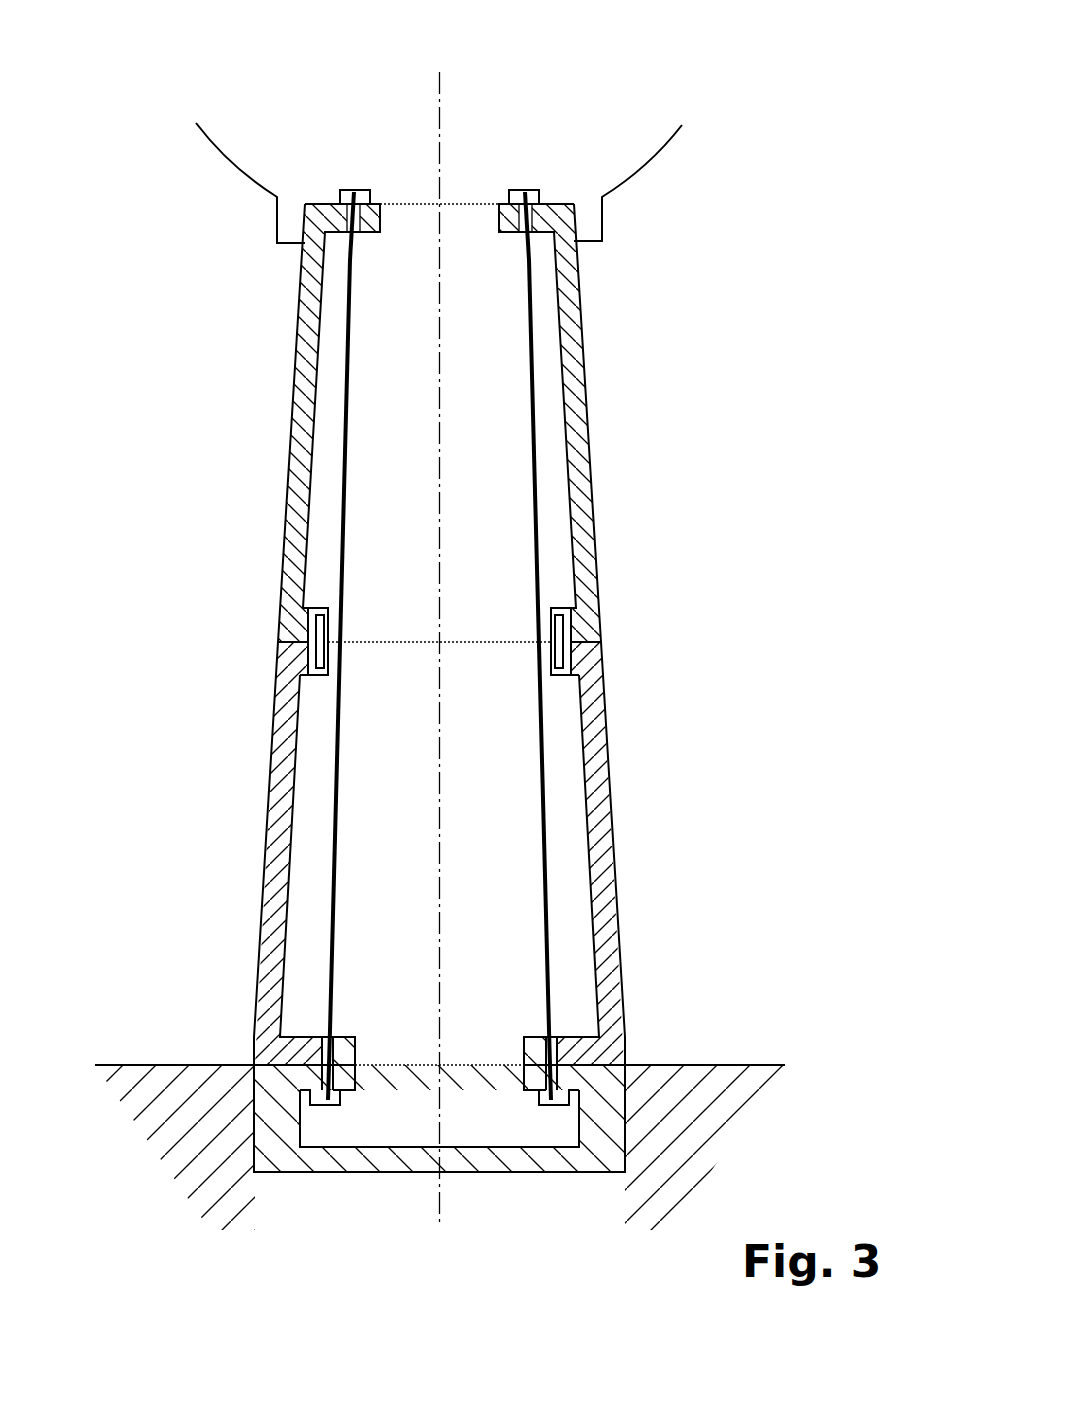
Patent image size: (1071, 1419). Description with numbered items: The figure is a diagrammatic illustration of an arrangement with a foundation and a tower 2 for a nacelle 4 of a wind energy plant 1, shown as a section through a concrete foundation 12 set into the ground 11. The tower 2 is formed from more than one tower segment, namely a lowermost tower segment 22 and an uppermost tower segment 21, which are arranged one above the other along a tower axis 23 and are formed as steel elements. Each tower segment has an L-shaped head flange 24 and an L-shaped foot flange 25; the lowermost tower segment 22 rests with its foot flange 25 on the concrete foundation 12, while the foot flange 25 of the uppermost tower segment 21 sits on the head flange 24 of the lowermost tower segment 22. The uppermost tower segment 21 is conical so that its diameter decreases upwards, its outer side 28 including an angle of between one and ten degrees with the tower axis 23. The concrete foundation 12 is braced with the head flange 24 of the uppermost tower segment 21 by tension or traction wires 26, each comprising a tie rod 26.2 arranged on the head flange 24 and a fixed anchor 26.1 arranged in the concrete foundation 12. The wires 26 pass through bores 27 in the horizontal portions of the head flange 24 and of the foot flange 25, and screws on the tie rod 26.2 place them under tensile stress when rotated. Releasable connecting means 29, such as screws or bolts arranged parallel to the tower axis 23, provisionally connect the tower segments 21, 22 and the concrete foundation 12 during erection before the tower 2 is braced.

The wind energy plant 1 is at (648, 88).
The tower 2 is at (165, 510).
The nacelle 4 is at (676, 143).
The ground 11 is at (743, 1065).
The concrete foundation 12 is at (470, 1160).
The uppermost tower segment 21 is at (296, 447).
The lowermost tower segment 22 is at (271, 790).
The tower axis 23 is at (440, 88).
The head flange 24 is at (509, 233).
The foot flange 25 is at (553, 630).
The tension or traction wires 26 is at (533, 360).
The fixed anchor 26.1 is at (322, 1106).
The tie rod 26.2 is at (346, 190).
The bores 27 is at (358, 208).
The outer side 28 is at (590, 435).
The releasable connecting means 29 is at (308, 645).